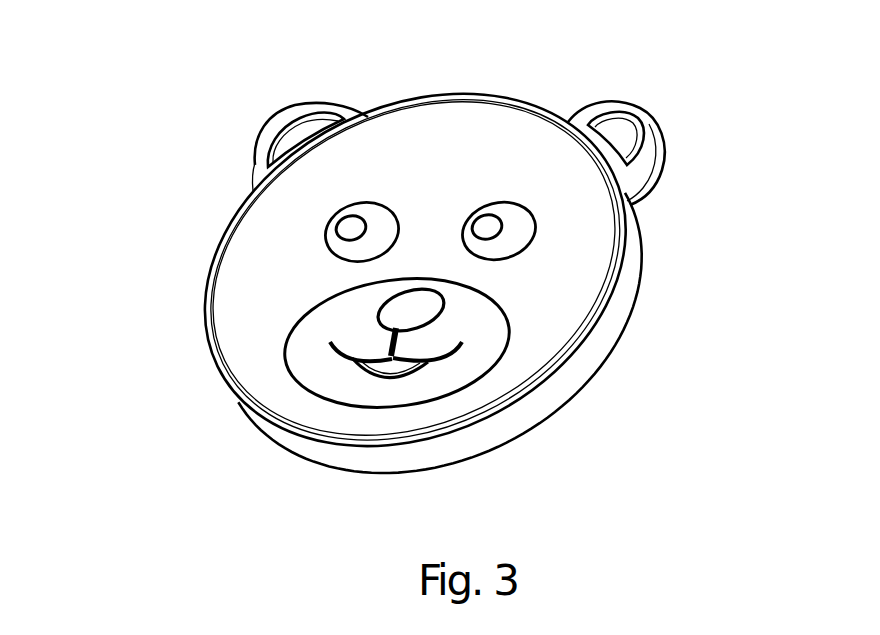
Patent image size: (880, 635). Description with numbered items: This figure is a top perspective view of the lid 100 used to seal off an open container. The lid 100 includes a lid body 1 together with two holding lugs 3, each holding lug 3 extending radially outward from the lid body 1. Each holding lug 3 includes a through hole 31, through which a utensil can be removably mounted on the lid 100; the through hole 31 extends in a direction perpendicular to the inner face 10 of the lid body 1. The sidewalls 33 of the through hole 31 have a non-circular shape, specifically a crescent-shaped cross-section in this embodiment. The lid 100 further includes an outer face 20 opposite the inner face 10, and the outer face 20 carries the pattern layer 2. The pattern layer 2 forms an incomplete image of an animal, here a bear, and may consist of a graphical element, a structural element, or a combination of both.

The lid 100 is at (176, 82).
The inner face 10 is at (216, 406).
The lid body 1 is at (586, 286).
The outer face 20 is at (414, 270).
The pattern layer 2 is at (490, 356).
The holding lug 3 is at (265, 140).
The through hole 31 is at (301, 133).
The sidewalls 33 is at (621, 127).